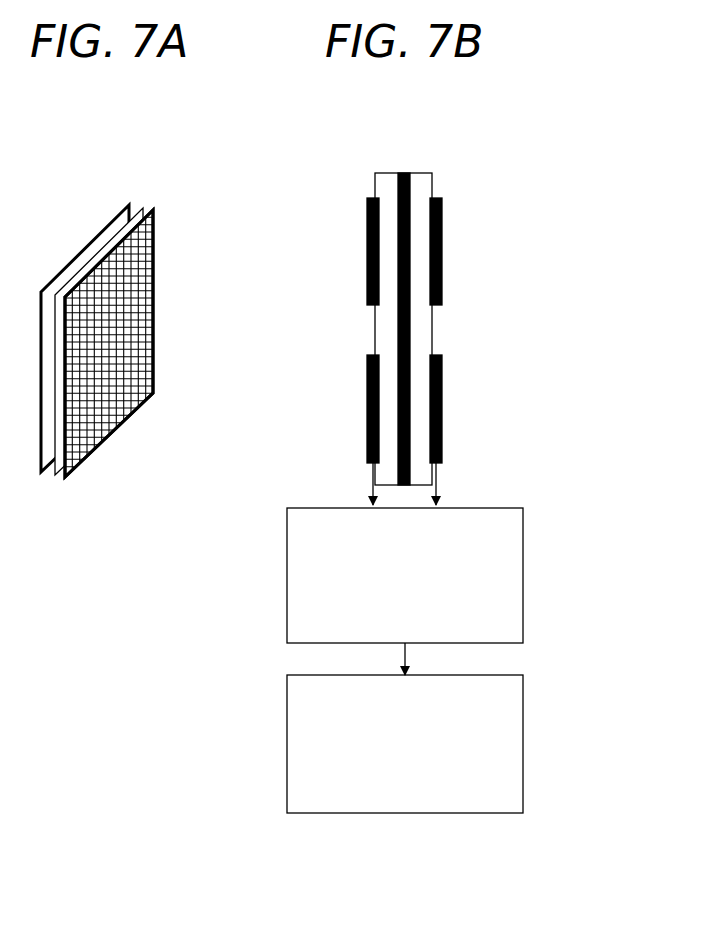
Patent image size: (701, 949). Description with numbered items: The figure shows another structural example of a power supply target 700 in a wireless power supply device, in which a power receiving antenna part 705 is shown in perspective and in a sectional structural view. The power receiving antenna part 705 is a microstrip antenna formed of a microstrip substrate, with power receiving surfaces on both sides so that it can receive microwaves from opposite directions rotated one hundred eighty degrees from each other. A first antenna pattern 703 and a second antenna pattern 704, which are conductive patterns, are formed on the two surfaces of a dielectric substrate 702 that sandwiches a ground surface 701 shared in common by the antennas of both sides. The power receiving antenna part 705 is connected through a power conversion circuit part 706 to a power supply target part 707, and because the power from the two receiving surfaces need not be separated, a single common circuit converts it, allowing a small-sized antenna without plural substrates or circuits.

In FIG. 7B, the power supply target 700 is at (435, 462).
In FIG. 7B, the ground surface 701 is at (403, 173).
In FIG. 7B, the dielectric substrate 702 is at (383, 185).
In FIG. 7B, the first antenna pattern 703 is at (367, 283).
In FIG. 7B, the second antenna pattern 704 is at (443, 283).
In FIG. 7A, the power receiving antenna part 705 is at (147, 196).
In FIG. 7B, the power receiving antenna part 705 is at (437, 181).
In FIG. 7B, the power conversion circuit part 706 is at (523, 572).
In FIG. 7B, the power supply target part 707 is at (523, 740).